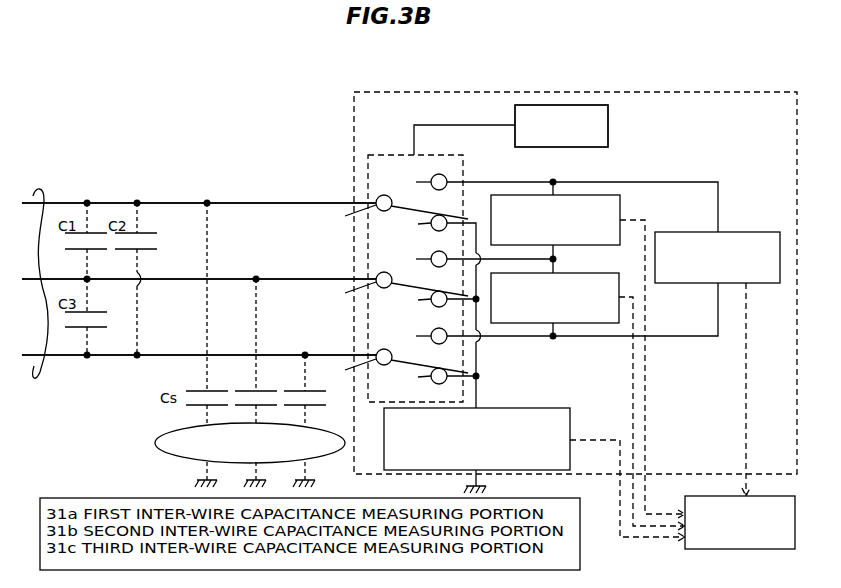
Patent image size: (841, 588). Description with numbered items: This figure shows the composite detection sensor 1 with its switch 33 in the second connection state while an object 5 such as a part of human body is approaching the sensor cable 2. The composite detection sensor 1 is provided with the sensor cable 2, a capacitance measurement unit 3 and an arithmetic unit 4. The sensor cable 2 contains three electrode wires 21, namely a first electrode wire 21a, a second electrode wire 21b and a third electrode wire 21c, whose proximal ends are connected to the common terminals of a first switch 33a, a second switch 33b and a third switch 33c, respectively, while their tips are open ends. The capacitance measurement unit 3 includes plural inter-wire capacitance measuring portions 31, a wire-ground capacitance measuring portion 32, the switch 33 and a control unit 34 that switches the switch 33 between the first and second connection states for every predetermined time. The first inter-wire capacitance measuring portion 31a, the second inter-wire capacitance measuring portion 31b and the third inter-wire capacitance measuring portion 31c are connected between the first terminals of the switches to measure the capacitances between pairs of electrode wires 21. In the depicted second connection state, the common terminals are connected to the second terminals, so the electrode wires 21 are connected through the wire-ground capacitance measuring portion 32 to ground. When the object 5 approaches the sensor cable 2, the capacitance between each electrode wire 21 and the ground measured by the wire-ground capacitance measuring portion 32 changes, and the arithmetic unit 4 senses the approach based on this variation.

The composite detection sensor 1 is at (592, 82).
The sensor cable 2 is at (46, 174).
The capacitance measurement unit 3 is at (379, 81).
The arithmetic unit 4 is at (770, 496).
The object 5 is at (155, 443).
The electrode wires 21 is at (126, 192).
The first electrode wire 21a is at (218, 201).
The second electrode wire 21b is at (218, 277).
The third electrode wire 21c is at (218, 353).
The inter-wire capacitance measuring portions 31 is at (635, 338).
The first inter-wire capacitance measuring portion 31a is at (622, 207).
The second inter-wire capacitance measuring portion 31b is at (744, 234).
The third inter-wire capacitance measuring portion 31c is at (596, 276).
The wire-ground capacitance measuring portion 32 is at (524, 408).
The switch 33 is at (364, 143).
The first switch 33a is at (374, 174).
The second switch 33b is at (374, 251).
The third switch 33c is at (374, 328).
The control unit 34 is at (560, 105).